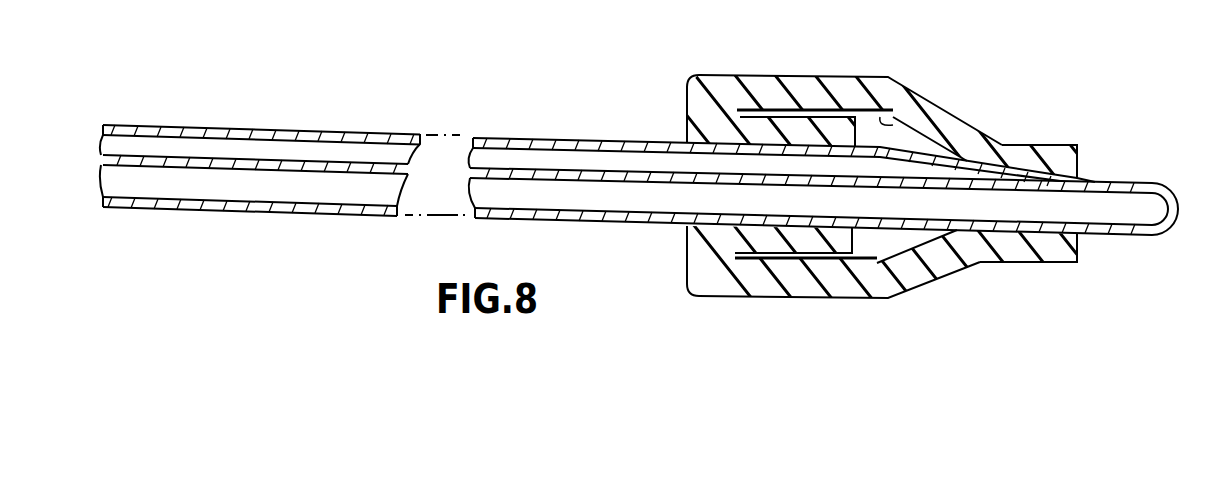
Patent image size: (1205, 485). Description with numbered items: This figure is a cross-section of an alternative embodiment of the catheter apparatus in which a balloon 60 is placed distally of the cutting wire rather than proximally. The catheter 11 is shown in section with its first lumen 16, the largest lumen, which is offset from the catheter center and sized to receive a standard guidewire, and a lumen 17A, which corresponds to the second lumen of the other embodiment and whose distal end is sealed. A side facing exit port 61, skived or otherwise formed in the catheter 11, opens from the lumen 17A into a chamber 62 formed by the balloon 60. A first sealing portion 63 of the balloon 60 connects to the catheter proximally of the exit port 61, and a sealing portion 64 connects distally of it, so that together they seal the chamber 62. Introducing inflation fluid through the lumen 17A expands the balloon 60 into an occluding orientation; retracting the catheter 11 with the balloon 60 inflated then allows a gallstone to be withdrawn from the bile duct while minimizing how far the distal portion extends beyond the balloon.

The catheter 11 is at (310, 128).
The lumen 17A is at (127, 142).
The first lumen 16 is at (150, 183).
The balloon 60 is at (952, 112).
The side facing exit port 61 is at (960, 157).
The chamber 62 is at (892, 110).
The first sealing portion 63 is at (758, 117).
The sealing portion 64 is at (1063, 152).